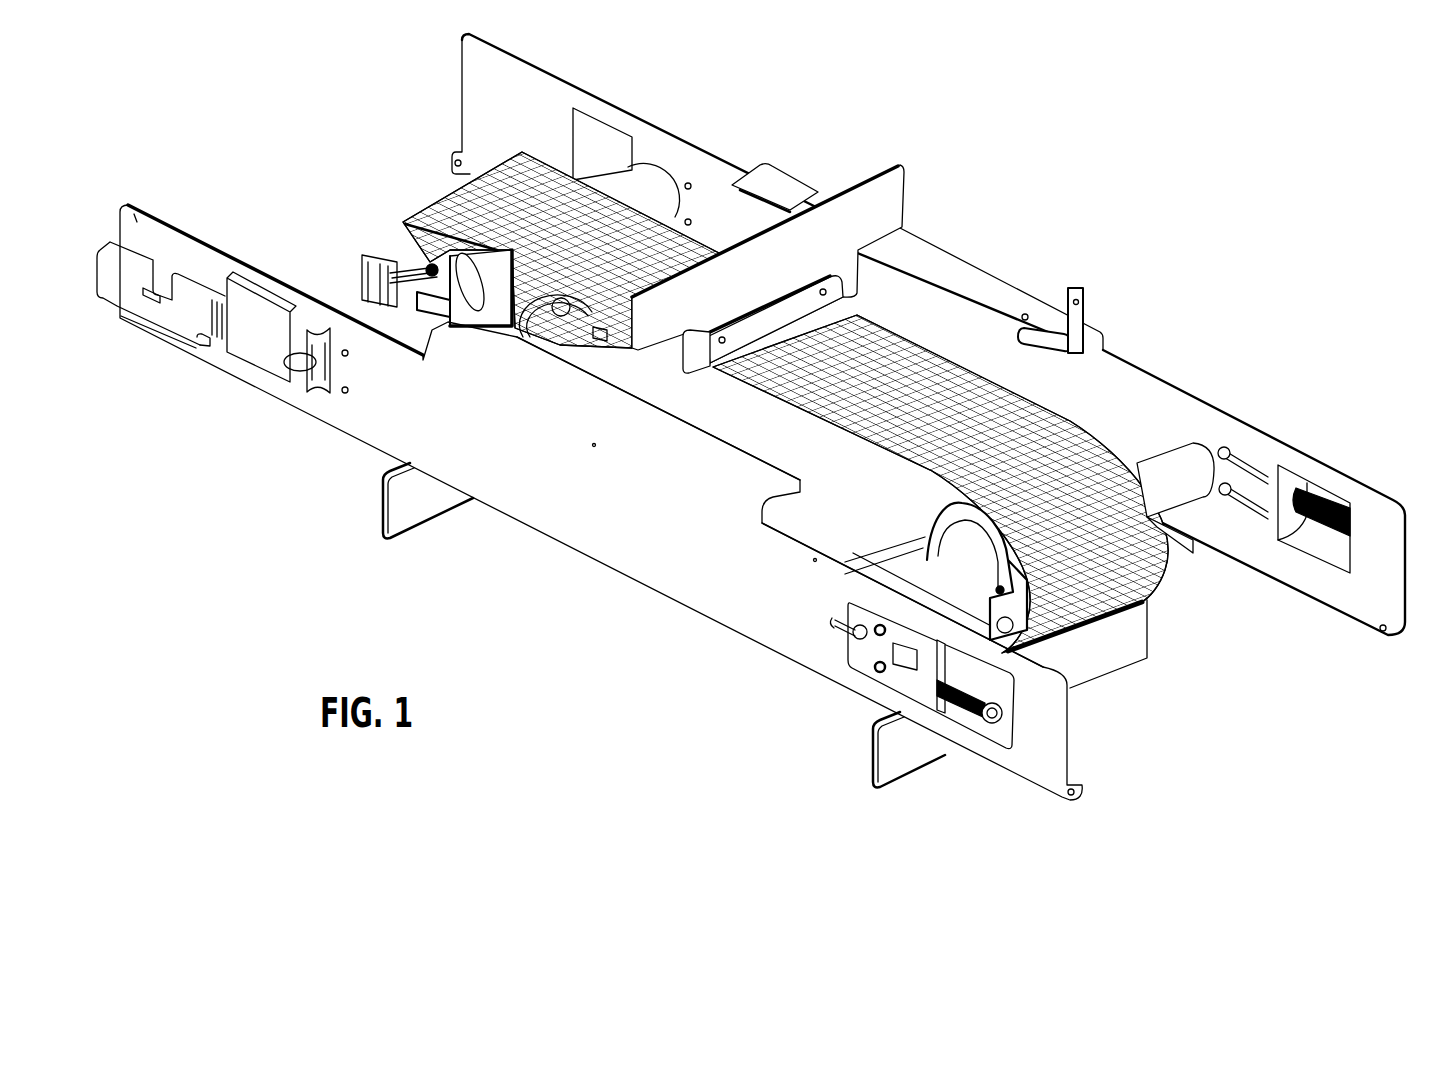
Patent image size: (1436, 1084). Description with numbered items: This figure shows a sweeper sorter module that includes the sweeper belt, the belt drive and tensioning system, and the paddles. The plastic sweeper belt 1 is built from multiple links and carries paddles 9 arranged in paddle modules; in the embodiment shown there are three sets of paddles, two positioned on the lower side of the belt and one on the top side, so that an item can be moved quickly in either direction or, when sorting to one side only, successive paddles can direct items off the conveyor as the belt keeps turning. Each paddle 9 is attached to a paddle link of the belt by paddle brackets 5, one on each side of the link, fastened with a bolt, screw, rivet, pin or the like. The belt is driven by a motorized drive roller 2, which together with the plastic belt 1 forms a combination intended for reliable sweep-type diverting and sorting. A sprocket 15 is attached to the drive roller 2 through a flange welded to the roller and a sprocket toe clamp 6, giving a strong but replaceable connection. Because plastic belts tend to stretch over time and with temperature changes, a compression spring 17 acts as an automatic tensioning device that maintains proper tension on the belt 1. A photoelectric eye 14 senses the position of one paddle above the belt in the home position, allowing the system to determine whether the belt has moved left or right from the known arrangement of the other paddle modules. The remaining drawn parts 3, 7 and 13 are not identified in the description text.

The plastic sweeper belt 1 is at (1062, 530).
The motorized drive roller 2 is at (378, 314).
The drive roller motor 3 is at (1160, 490).
The paddle bracket 5 is at (786, 305).
The sprocket toe clamp 6 is at (433, 265).
The mounting plate 7 is at (862, 657).
The paddle 9 is at (870, 197).
The control housing 13 is at (193, 338).
The photoelectric eye 14 is at (1076, 288).
The sprocket 15 is at (388, 262).
The compression spring 17 is at (975, 715).